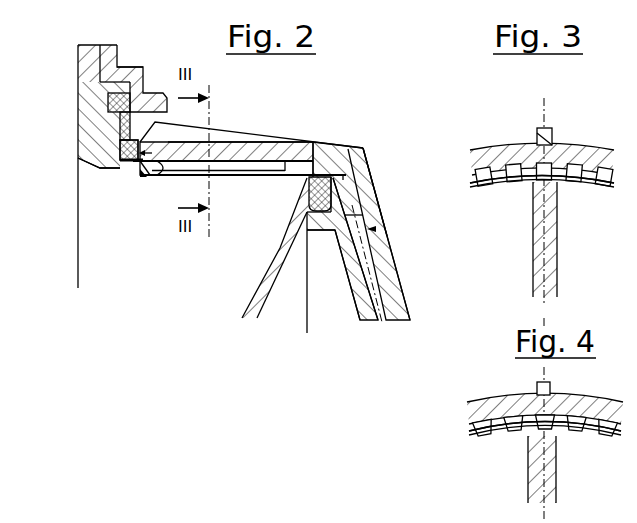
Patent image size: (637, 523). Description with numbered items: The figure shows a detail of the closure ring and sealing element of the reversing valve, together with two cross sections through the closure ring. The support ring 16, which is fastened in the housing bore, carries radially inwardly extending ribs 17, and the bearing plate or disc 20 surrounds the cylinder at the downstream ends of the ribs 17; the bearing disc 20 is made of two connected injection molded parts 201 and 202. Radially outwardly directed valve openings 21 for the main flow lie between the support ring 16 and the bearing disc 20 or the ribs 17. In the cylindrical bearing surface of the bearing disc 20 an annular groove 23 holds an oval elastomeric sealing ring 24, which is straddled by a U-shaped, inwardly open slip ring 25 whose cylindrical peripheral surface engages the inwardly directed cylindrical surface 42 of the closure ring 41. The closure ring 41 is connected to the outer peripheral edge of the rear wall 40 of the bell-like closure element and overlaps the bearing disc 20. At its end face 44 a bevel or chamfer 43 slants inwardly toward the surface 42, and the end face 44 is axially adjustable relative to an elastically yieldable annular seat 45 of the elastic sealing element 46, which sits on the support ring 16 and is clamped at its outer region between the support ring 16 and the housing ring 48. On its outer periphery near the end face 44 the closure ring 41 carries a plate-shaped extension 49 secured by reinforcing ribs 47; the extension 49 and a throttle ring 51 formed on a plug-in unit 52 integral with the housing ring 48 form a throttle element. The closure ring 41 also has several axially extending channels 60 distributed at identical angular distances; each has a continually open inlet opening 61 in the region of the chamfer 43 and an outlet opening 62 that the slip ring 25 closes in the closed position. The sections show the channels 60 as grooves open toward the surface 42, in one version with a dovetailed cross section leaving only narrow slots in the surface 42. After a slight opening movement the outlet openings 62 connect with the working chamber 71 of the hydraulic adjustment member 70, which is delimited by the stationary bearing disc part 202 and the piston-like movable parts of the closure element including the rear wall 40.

In FIG. 2, the support ring 16 is at (88, 117).
In FIG. 3, the ribs 17 is at (540, 244).
In FIG. 4, the ribs 17 is at (550, 484).
In FIG. 2, the bearing plate or disc 20 is at (357, 311).
In FIG. 3, the valve openings 21 is at (495, 188).
In FIG. 4, the valve openings 21 is at (588, 436).
In FIG. 2, the annular groove 23 is at (365, 175).
In FIG. 2, the sealing ring 24 is at (350, 160).
In FIG. 2, the slip ring 25 is at (335, 165).
In FIG. 2, the rear wall 40 is at (383, 255).
In FIG. 2, the closure ring 41 is at (283, 152).
In FIG. 3, the closure ring 41 is at (553, 148).
In FIG. 4, the closure ring 41 is at (483, 402).
In FIG. 2, the cylindrical surface 42 is at (280, 184).
In FIG. 3, the cylindrical surface 42 is at (582, 186).
In FIG. 4, the cylindrical surface 42 is at (521, 440).
In FIG. 2, the bevel or chamfer 43 is at (137, 178).
In FIG. 2, the end face 44 is at (100, 166).
In FIG. 2, the annular seat 45 is at (148, 178).
In FIG. 2, the sealing element 46 is at (112, 135).
In FIG. 2, the reinforcing ribs 47 is at (233, 142).
In FIG. 3, the reinforcing ribs 47 is at (537, 131).
In FIG. 4, the reinforcing ribs 47 is at (537, 388).
In FIG. 2, the housing ring 48 is at (100, 63).
In FIG. 2, the plate-shaped extension 49 is at (213, 123).
In FIG. 2, the throttle ring 51 is at (147, 97).
In FIG. 2, the plug-in unit 52 is at (130, 67).
In FIG. 2, the axial channels 60 is at (244, 176).
In FIG. 3, the axial channels 60 is at (612, 176).
In FIG. 4, the axial channels 60 is at (507, 433).
In FIG. 2, the inlet opening 61 is at (129, 150).
In FIG. 2, the outlet opening 62 is at (319, 188).
In FIG. 2, the hydraulic adjustment member 70 is at (378, 230).
In FIG. 2, the working chamber 71 is at (368, 212).
In FIG. 2, the bearing disc part 201 is at (253, 313).
In FIG. 2, the bearing disc part 202 is at (371, 322).